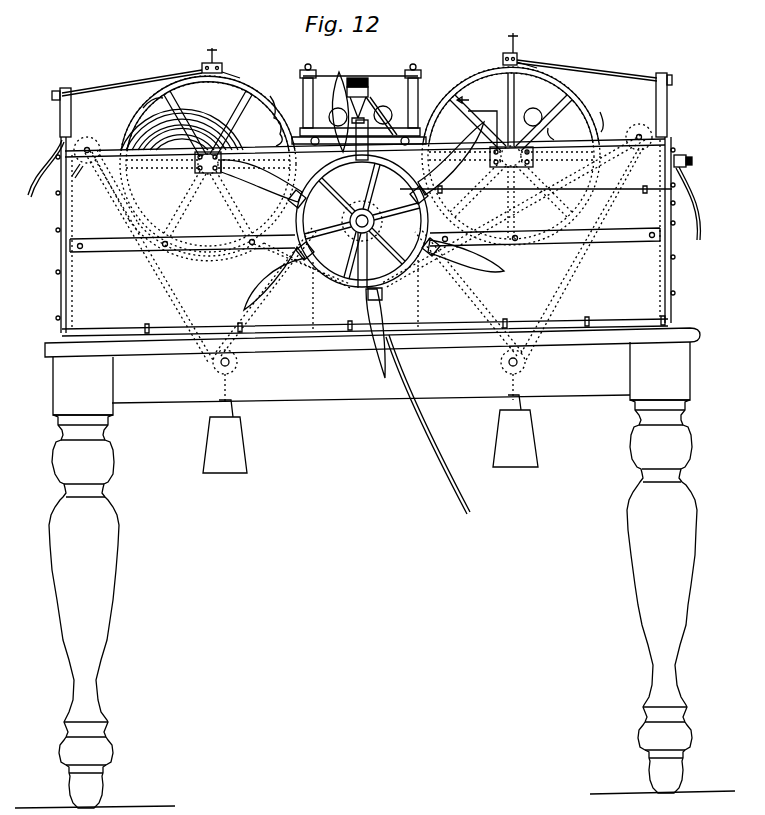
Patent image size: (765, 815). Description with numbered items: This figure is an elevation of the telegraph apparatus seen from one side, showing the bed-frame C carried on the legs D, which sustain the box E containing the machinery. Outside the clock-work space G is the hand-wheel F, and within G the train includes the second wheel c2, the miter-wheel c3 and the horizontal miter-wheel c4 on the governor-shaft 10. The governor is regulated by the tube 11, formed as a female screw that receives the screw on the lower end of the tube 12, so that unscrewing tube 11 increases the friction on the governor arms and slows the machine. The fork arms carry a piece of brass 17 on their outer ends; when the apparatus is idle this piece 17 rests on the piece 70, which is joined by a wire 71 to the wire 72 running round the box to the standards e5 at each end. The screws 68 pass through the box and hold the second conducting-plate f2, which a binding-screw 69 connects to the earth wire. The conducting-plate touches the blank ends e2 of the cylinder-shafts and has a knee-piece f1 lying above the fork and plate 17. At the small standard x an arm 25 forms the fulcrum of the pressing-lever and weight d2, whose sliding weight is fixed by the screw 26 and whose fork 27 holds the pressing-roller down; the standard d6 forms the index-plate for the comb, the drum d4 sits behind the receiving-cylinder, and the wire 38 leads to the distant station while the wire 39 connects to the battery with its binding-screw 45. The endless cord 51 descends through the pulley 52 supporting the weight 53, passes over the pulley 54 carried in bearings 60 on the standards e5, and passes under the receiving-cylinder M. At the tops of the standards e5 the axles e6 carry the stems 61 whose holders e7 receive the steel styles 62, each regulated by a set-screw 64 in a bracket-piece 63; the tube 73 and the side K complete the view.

The governor-shaft 10 is at (345, 104).
The tube 11 is at (369, 94).
The tube 12 is at (369, 82).
The piece of brass 17 is at (365, 111).
The arm 25 is at (533, 113).
The screw 26 is at (469, 100).
The fork 27 is at (387, 116).
The wire 38 is at (38, 168).
The wire 39 is at (694, 203).
The switch 45 is at (682, 158).
The endless cord or band 51 is at (226, 258).
The pulley 52 is at (238, 364).
The weight 53 is at (370, 434).
The pulley 54 is at (88, 146).
The bearings 60 is at (75, 174).
The stems 61 is at (359, 75).
The writing or marking styles 62 is at (224, 75).
The bracket-piece 63 is at (214, 55).
The set-screw 64 is at (361, 39).
The screws 68 is at (362, 221).
The binding-screw 69 is at (379, 266).
The piece 70 is at (357, 221).
The wire 71 is at (536, 184).
The wire 72 is at (673, 288).
The tube 73 is at (440, 428).
The receiving-cylinder M is at (361, 159).
The bed-frame C is at (372, 285).
The legs D is at (375, 604).
The box E is at (365, 320).
The hand-wheel F is at (365, 216).
The space and frames of the clock-work G is at (375, 333).
The side of the machine K is at (365, 266).
The standards e5 is at (71, 117).
The axles e6 is at (668, 100).
The holders e7 is at (224, 67).
The blank ends of the cylinder-shafts e2 is at (511, 157).
The knee-piece f1 is at (359, 141).
The second conducting-plate f2 is at (365, 240).
The second wheel c2 is at (361, 126).
The miter-wheel c3 is at (381, 147).
The horizontal miter-wheel c4 is at (397, 137).
The pressing-lever and weight d2 is at (484, 130).
The drum d4 is at (182, 136).
The standard forming an index-plate d6 is at (271, 125).
The small standard / screw x is at (554, 135).